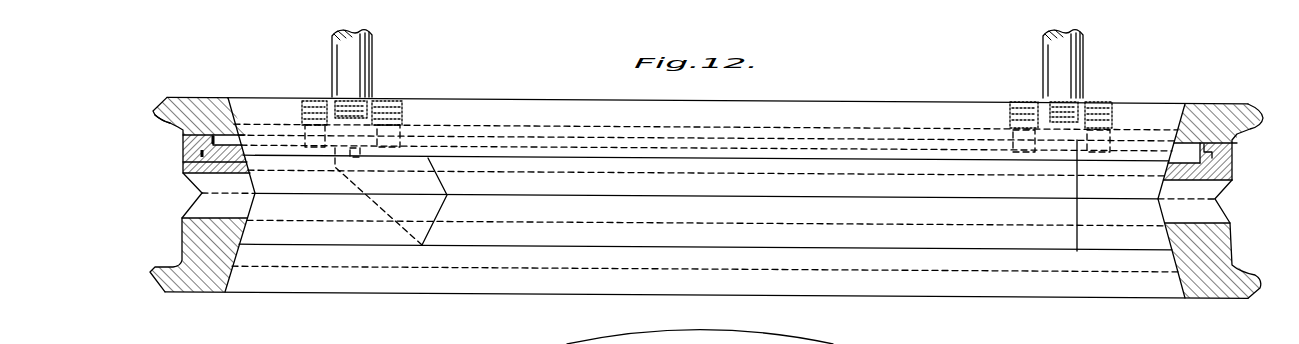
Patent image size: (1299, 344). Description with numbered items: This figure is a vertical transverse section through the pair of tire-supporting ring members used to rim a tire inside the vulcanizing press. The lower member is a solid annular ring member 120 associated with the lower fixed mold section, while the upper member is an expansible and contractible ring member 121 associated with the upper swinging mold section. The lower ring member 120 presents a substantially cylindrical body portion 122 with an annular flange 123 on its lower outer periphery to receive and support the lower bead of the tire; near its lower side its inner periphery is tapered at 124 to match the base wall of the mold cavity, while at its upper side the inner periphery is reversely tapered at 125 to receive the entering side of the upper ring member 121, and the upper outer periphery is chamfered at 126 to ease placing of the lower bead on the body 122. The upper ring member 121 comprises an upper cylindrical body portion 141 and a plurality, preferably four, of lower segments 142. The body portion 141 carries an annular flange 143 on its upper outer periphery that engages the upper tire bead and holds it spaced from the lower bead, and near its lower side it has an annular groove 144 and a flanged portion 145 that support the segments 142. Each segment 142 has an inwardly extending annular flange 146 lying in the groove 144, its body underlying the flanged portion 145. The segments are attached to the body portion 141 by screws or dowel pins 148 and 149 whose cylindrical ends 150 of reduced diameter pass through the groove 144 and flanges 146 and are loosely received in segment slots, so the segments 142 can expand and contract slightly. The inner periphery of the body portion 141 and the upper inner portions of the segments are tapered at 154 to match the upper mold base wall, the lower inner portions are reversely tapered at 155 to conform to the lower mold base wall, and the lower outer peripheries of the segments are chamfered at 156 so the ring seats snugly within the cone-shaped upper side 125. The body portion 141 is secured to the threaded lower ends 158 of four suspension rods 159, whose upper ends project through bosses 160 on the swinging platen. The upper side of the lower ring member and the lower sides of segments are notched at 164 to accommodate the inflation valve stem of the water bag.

The lower ring member 120 is at (207, 292).
The upper ring member 121 is at (163, 132).
The cylindrical body portion 122 is at (195, 240).
The annular flange 123 is at (165, 277).
The tapered inner periphery 124 is at (239, 279).
The reverse tapered upper side 125 is at (227, 238).
The chamfer 126 is at (185, 211).
The upper cylindrical body portion 141 is at (203, 107).
The lower segments 142 is at (193, 167).
The annular flange 143 is at (165, 103).
The annular groove 144 is at (215, 138).
The flanged portion 145 is at (245, 155).
The inwardly extending annular flange 146 is at (197, 137).
The screw or dowel pin 148 is at (312, 102).
The screw or dowel pin 149 is at (378, 106).
The cylindrical ends of reduced diameter 150 is at (398, 127).
The tapered inner periphery 154 is at (246, 126).
The reverse tapered inner periphery 155 is at (261, 214).
The chamfer 156 is at (183, 185).
The threaded lower ends 158 is at (350, 100).
The suspension rods 159 is at (355, 53).
The notch 164 is at (212, 179).
The bosses 160 is at (1214, 142).